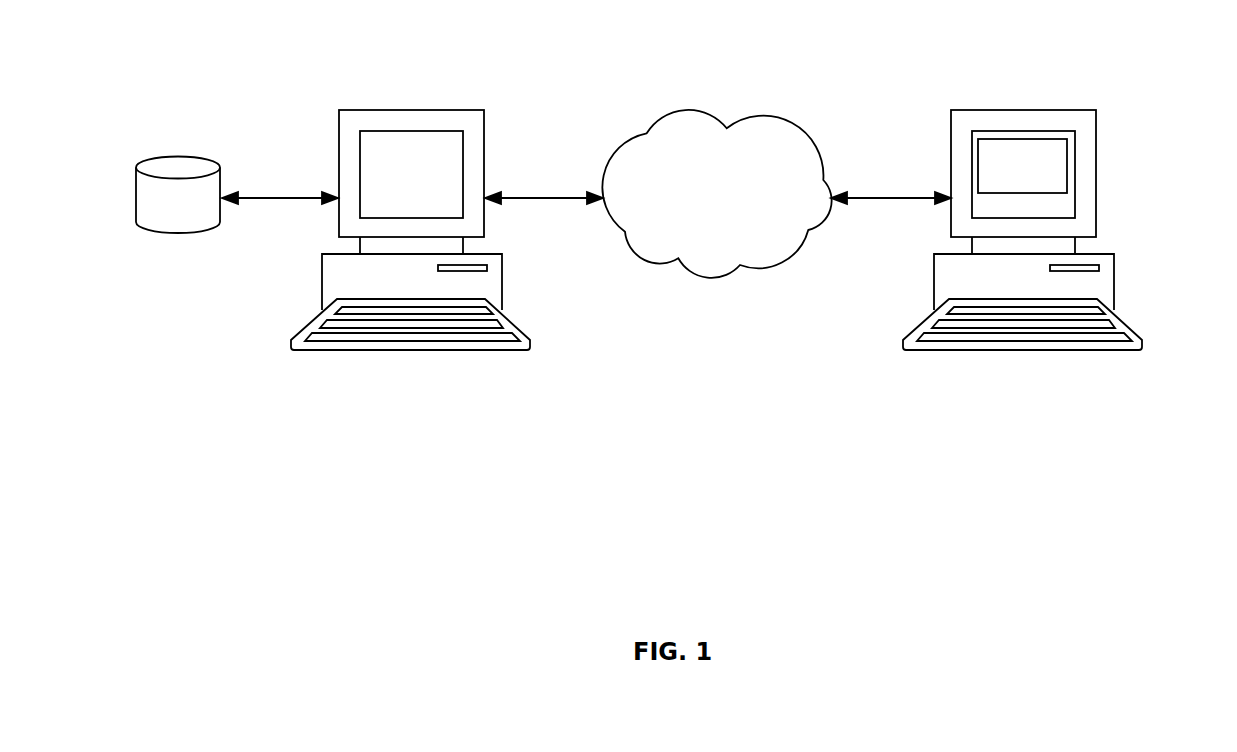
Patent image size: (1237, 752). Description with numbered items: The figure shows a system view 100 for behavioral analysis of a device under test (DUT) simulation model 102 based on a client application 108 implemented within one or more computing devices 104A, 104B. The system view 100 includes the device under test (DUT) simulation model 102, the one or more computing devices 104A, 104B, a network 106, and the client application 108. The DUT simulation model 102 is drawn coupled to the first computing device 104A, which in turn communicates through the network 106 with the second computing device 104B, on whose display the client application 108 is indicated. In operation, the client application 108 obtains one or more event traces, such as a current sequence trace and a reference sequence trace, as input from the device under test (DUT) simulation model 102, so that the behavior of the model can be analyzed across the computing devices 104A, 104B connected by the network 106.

The system view 100 is at (670, 265).
The device under test (DUT) simulation model 102 is at (167, 233).
The computing device 104A is at (338, 132).
The computing device 104B is at (1070, 230).
The network 106 is at (759, 112).
The client application 108 is at (1043, 170).